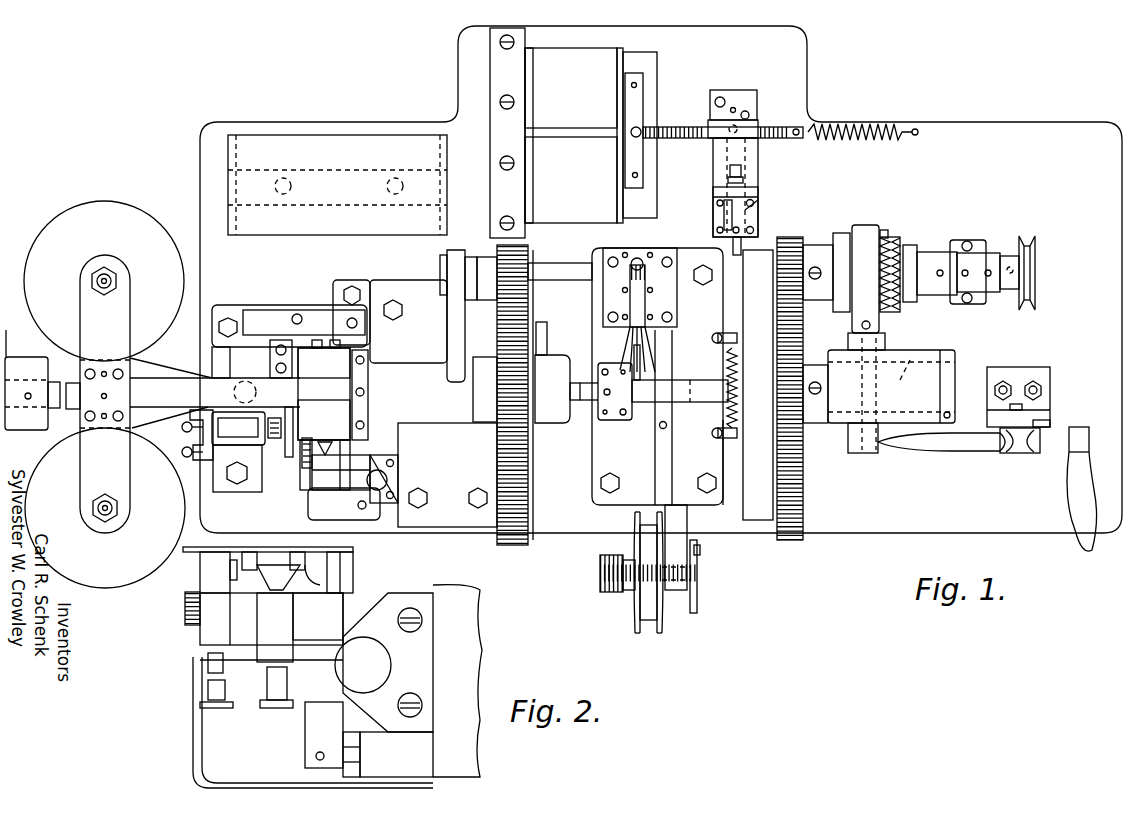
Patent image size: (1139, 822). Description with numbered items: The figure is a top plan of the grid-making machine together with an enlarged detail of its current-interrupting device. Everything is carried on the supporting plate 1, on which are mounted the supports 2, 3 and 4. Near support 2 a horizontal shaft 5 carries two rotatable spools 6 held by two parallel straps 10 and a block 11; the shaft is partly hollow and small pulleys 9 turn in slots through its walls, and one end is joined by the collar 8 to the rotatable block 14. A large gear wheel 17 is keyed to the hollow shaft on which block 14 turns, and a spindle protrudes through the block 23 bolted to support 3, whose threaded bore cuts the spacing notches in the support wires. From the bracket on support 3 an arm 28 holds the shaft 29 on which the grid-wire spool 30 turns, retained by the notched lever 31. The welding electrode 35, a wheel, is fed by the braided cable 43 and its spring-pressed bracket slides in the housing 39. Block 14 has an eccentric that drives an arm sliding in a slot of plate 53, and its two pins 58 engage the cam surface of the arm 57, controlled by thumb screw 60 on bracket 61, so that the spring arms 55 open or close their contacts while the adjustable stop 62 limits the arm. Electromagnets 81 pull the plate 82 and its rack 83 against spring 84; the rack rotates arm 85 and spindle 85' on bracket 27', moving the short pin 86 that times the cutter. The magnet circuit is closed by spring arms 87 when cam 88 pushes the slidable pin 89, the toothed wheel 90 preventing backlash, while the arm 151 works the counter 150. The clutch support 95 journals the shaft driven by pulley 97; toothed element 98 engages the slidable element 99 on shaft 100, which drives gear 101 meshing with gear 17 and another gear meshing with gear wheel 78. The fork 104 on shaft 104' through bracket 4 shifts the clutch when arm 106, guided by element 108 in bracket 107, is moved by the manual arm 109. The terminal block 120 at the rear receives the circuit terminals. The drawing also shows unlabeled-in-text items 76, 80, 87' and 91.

In FIG. 1, the supporting plate 1 is at (661, 279).
In FIG. 1, the support 2 is at (408, 390).
In FIG. 1, the support 3 is at (722, 492).
In FIG. 1, the support 4 is at (910, 362).
In FIG. 1, the horizontal rotatable shaft 5 is at (152, 380).
In FIG. 1, the rotatable spools 6 is at (150, 226).
In FIG. 1, the collar 8 is at (300, 390).
In FIG. 1, the small pulleys 9 is at (251, 392).
In FIG. 1, the parallel straps 10 is at (122, 326).
In FIG. 1, the block 11 is at (150, 362).
In FIG. 1, the block 14 is at (324, 420).
In FIG. 1, the large gear wheel 17 is at (497, 443).
In FIG. 1, the block 23 is at (605, 422).
In FIG. 1, the bracket 27' is at (713, 187).
In FIG. 1, the arm 28 is at (690, 575).
In FIG. 1, the shaft 29 is at (700, 578).
In FIG. 1, the spool 30 is at (658, 634).
In FIG. 1, the lever 31 is at (698, 603).
In FIG. 1, the welding electrode 35 is at (646, 368).
In FIG. 1, the housing 39 is at (655, 262).
In FIG. 1, the braided cable 43 is at (648, 316).
In FIG. 1, the plate 53 is at (305, 470).
In FIG. 2, the spring arms 55 is at (205, 700).
In FIG. 1, the arm 57 is at (345, 462).
In FIG. 2, the arm 57 is at (177, 633).
In FIG. 2, the pins 58 is at (295, 585).
In FIG. 1, the thumb screw 60 is at (400, 476).
In FIG. 2, the thumb screw 60 is at (363, 665).
In FIG. 2, the bracket 61 is at (398, 665).
In FIG. 1, the adjustable stop 62 is at (344, 504).
In FIG. 2, the adjustable stop 62 is at (282, 712).
In FIG. 1, the spring 76 is at (738, 368).
In FIG. 1, the large gear wheel 78 is at (803, 490).
In FIG. 1, the bar 80 is at (758, 385).
In FIG. 1, the electromagnets 81 is at (560, 145).
In FIG. 1, the plate 82 is at (640, 100).
In FIG. 1, the rack 83 is at (778, 140).
In FIG. 1, the spring 84 is at (872, 140).
In FIG. 1, the arm 85 is at (749, 113).
In FIG. 1, the short spindle 85' is at (704, 208).
In FIG. 1, the short pin 86 is at (760, 225).
In FIG. 1, the spring arms 87 is at (289, 323).
In FIG. 1, the bracket leg 87' is at (235, 353).
In FIG. 1, the cam 88 is at (249, 452).
In FIG. 1, the slidable pin 89 is at (324, 363).
In FIG. 1, the toothed wheel 90 is at (300, 468).
In FIG. 1, the contact screw 91 is at (760, 210).
In FIG. 1, the supporting element 95 is at (950, 242).
In FIG. 1, the driving pulley 97 is at (1036, 300).
In FIG. 1, the toothed clutch element 98 is at (905, 240).
In FIG. 1, the clutch element 99 is at (888, 236).
In FIG. 1, the shaft 100 is at (568, 252).
In FIG. 1, the gear 101 is at (490, 290).
In FIG. 1, the forked member 104 is at (844, 270).
In FIG. 1, the shaft 104' is at (879, 395).
In FIG. 1, the arm 106 is at (940, 452).
In FIG. 1, the bracket 107 is at (1040, 405).
In FIG. 1, the element 108 is at (1020, 452).
In FIG. 1, the arm 109 is at (1075, 508).
In FIG. 1, the terminal block 120 is at (330, 133).
In FIG. 1, the counter 150 is at (210, 462).
In FIG. 1, the arm 151 is at (185, 456).